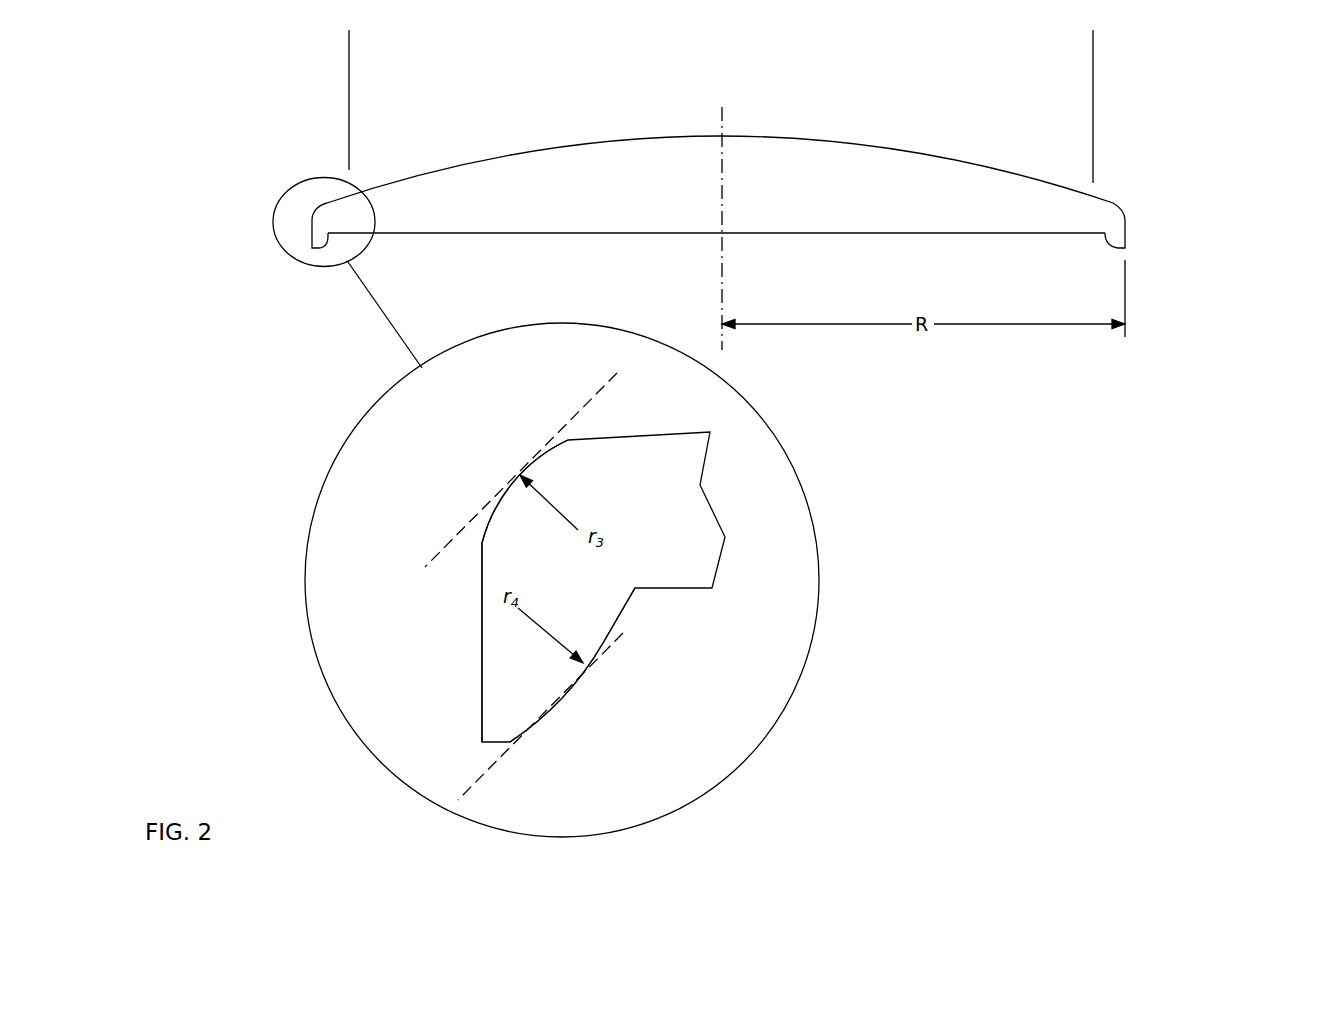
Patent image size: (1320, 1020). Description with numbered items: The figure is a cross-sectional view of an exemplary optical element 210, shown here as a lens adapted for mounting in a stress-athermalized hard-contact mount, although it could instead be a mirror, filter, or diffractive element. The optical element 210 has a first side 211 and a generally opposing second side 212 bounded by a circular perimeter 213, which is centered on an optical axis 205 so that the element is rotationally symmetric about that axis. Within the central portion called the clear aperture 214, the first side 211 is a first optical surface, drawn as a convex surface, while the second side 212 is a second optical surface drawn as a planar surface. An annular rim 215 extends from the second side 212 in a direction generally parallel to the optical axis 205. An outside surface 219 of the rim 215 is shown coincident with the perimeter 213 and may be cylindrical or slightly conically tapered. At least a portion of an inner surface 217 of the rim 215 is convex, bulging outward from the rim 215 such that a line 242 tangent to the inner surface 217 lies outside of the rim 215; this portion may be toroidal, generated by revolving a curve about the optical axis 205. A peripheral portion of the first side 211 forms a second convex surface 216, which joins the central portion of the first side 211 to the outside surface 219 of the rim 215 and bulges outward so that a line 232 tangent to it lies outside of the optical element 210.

The optical axis 205 is at (722, 287).
The optical element 210 is at (784, 190).
The first side 211 is at (572, 140).
The second side 212 is at (697, 250).
The circular perimeter 213 is at (1127, 220).
The clear aperture 214 is at (1093, 43).
The annular rim 215 is at (557, 587).
The second convex surface 216 is at (487, 517).
The inner surface 217 is at (608, 652).
The outside surface 219 is at (482, 637).
The line tangent to the second convex surface 232 is at (582, 410).
The line tangent to the inner surface 242 is at (493, 768).